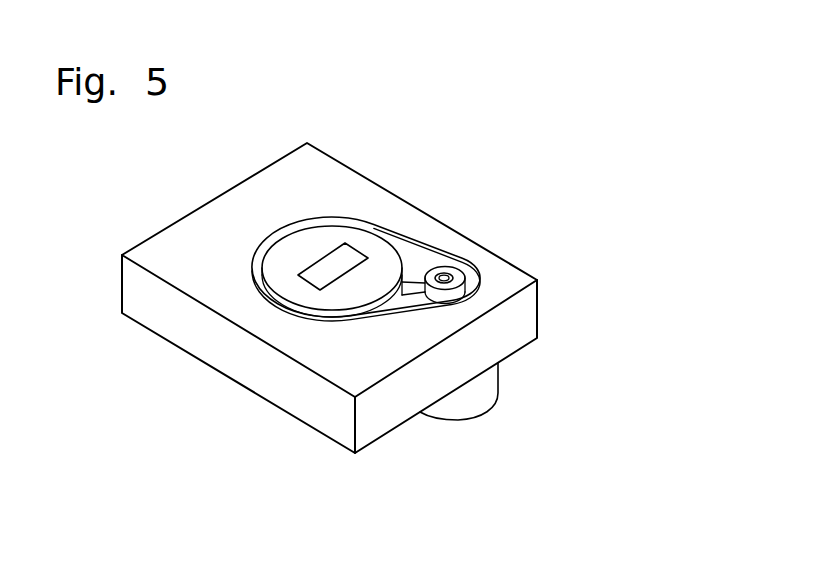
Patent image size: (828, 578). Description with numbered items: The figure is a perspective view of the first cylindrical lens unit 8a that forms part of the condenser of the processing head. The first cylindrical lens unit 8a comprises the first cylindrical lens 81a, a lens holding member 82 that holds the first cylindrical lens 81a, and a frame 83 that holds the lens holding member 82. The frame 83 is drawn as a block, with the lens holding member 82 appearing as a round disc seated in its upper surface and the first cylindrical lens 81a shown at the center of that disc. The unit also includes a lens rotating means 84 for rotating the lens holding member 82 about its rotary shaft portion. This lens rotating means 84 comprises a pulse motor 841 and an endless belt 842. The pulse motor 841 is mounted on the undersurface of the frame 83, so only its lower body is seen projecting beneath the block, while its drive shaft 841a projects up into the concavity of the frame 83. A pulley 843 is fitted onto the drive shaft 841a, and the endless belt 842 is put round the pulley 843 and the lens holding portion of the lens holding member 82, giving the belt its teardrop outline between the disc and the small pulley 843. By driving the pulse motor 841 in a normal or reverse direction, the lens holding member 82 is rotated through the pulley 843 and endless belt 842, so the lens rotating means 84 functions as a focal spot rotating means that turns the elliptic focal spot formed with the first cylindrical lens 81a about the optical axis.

The first cylindrical lens unit 8a is at (488, 202).
The frame 83 is at (378, 185).
The lens rotating means 84 is at (500, 385).
The pulse motor 841 is at (483, 402).
The drive shaft 841a is at (468, 256).
The endless belt 842 is at (413, 245).
The pulley 843 is at (457, 282).
The lens holding member 82 is at (287, 264).
The first cylindrical lens 81a is at (327, 260).